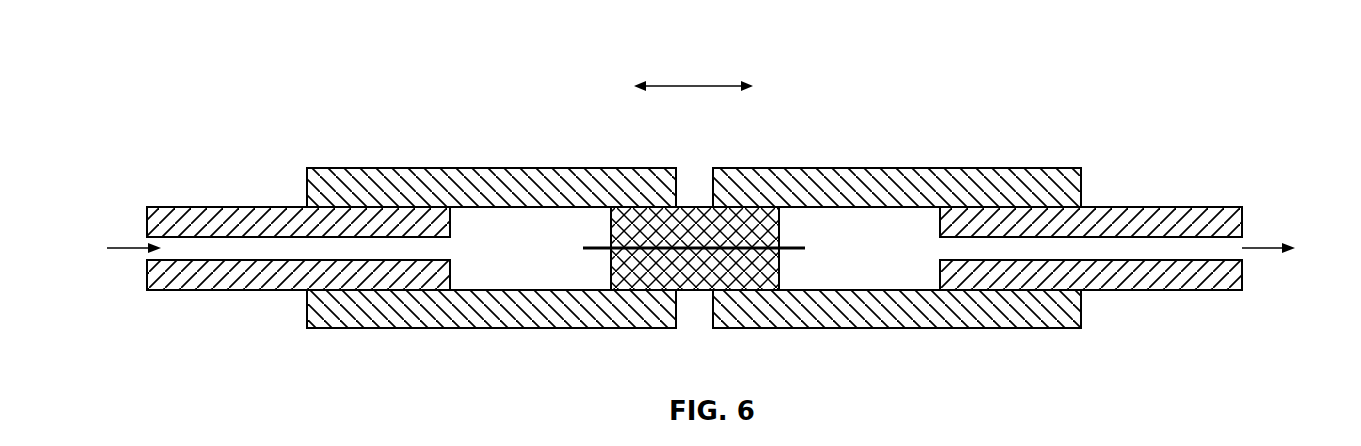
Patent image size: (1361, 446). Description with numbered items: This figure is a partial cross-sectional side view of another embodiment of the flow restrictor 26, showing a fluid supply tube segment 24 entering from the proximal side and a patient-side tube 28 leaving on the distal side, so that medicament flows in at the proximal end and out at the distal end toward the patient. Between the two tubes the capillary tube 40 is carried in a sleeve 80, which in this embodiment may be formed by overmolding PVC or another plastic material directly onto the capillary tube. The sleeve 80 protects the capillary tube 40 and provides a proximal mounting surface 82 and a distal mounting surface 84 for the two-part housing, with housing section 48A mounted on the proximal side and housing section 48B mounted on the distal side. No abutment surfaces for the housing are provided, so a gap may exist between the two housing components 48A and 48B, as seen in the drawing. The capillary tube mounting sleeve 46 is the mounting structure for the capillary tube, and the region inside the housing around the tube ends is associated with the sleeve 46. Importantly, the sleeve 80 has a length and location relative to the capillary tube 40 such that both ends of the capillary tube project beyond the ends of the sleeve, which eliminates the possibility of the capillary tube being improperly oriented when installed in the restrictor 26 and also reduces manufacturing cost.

The restrictor 26 is at (148, 100).
The fluid supply tube segment 24 is at (204, 207).
The patient-side tube 28 is at (1148, 207).
The housing section 48A is at (405, 168).
The housing section 48B is at (925, 168).
The capillary tube mounting sleeve 46 is at (533, 282).
The sleeve 80 is at (637, 205).
The proximal mounting surface 82 is at (644, 290).
The distal mounting surface 84 is at (752, 287).
The capillary tube 40 is at (593, 244).